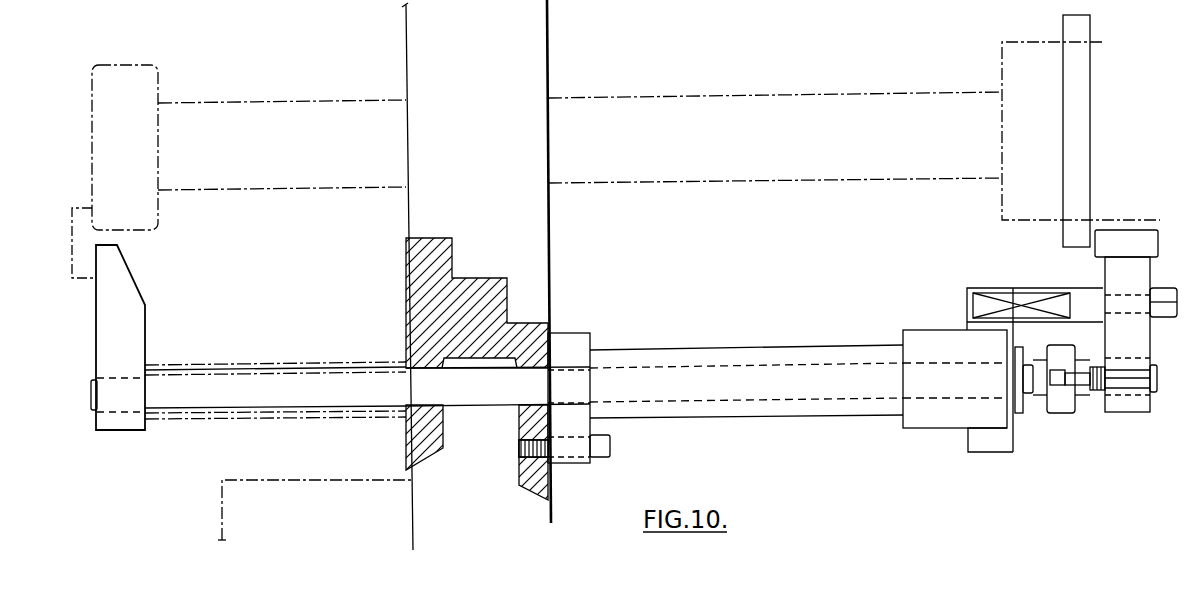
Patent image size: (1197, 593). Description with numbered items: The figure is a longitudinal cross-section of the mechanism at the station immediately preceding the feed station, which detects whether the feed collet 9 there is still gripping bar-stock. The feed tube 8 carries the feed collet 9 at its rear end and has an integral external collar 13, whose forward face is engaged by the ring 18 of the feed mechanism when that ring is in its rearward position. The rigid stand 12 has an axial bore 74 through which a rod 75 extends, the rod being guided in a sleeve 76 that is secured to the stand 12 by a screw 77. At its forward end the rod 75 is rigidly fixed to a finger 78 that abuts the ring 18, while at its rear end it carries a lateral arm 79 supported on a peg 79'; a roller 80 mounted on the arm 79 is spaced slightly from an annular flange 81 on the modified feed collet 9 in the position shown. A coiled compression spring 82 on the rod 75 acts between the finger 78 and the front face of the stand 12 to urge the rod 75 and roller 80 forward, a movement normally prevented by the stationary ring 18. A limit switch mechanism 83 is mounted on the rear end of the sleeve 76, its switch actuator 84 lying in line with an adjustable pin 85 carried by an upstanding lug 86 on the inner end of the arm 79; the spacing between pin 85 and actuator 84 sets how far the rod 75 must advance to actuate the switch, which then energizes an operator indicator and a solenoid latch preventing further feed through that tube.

The feed tube 8 is at (806, 97).
The feed collet 9 is at (1026, 36).
The stand 12 is at (410, 280).
The external collar 13 is at (132, 88).
The ring 18 is at (75, 233).
The axial bore 74 is at (406, 422).
The rod 75 is at (1095, 395).
The sleeve 76 is at (741, 405).
The screw 77 is at (597, 460).
The finger 78 is at (107, 313).
The lateral arm 79 is at (1149, 334).
The peg 79' is at (1035, 349).
The roller 80 is at (1133, 240).
The annular flange 81 is at (1079, 28).
The coiled compression spring 82 is at (203, 418).
The limit switch mechanism 83 is at (938, 418).
The switch actuator 84 is at (1020, 385).
The adjustable pin 85 is at (1073, 405).
The upstanding lug 86 is at (1128, 405).